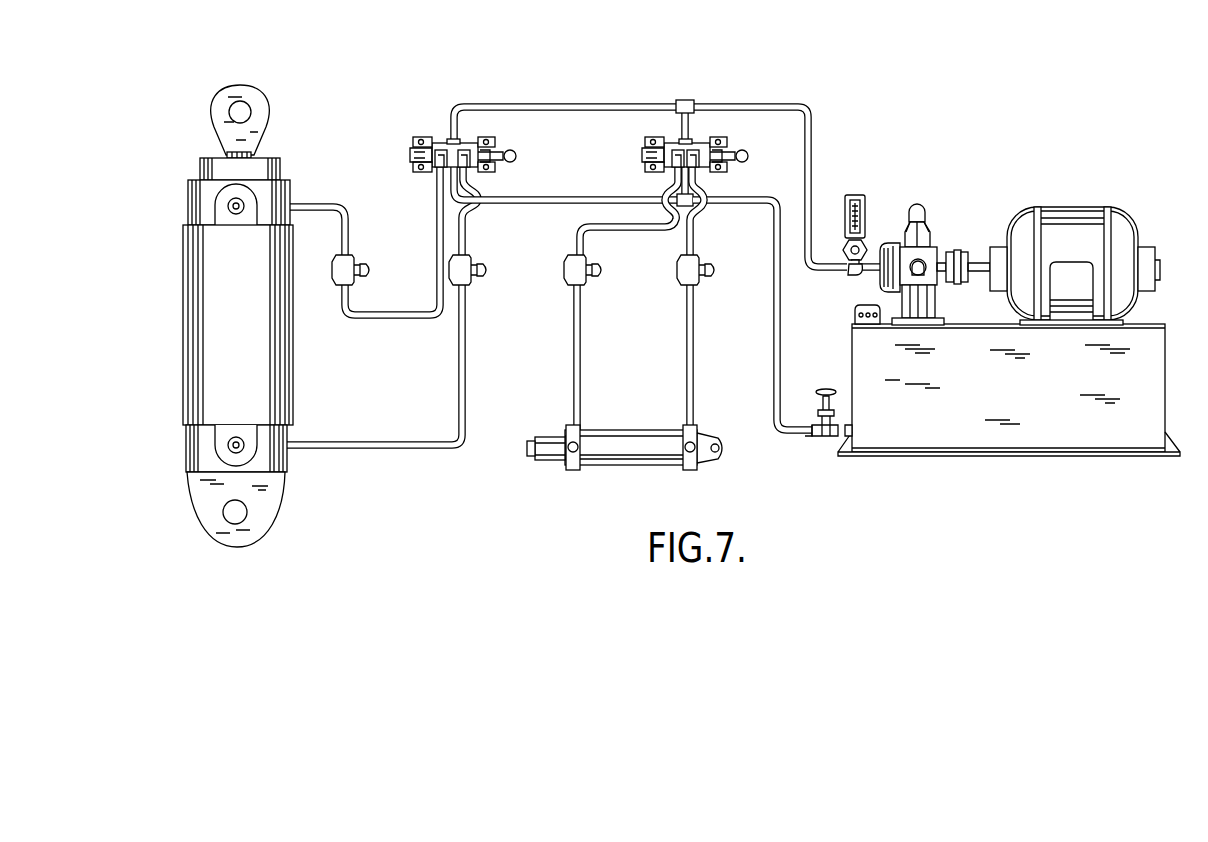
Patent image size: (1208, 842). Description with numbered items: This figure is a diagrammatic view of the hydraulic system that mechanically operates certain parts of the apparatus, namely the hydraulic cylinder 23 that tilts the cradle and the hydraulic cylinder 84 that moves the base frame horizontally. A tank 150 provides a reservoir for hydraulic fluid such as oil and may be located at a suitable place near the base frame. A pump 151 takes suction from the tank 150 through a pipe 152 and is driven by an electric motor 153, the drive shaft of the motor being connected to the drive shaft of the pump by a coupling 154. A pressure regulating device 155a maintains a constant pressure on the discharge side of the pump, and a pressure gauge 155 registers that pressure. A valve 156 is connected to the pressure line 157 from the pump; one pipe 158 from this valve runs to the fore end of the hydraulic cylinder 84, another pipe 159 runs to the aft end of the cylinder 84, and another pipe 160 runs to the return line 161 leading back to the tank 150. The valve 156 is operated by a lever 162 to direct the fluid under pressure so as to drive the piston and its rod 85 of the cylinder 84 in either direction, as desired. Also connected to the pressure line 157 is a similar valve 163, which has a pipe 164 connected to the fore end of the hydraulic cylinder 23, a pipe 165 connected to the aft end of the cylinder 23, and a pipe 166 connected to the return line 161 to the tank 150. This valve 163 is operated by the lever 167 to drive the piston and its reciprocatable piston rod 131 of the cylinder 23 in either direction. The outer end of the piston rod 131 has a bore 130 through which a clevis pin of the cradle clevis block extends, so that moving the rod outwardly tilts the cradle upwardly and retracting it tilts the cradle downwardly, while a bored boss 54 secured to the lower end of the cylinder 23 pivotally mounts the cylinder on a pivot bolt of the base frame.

The hydraulic cylinder 23 is at (291, 365).
The bored boss 54 is at (264, 523).
The hydraulic cylinder 84 is at (628, 466).
The piston rod 85 is at (550, 463).
The bore 130 is at (244, 105).
The piston rod 131 is at (255, 160).
The tank 150 is at (1008, 444).
The pump 151 is at (934, 247).
The pipe 152 is at (925, 303).
The electric motor 153 is at (1070, 218).
The coupling 154 is at (970, 251).
The pressure gauge 155 is at (866, 210).
The pressure regulating device 155a is at (922, 205).
The valve 156 is at (701, 143).
The pressure line 157 is at (808, 140).
The pipe 158 is at (633, 231).
The pipe 159 is at (694, 233).
The pipe 160 is at (678, 182).
The return line 161 is at (774, 315).
The lever 162 is at (748, 156).
The valve 163 is at (438, 143).
The pipe 164 is at (437, 238).
The pipe 165 is at (467, 353).
The pipe 166 is at (450, 190).
The lever 167 is at (515, 153).